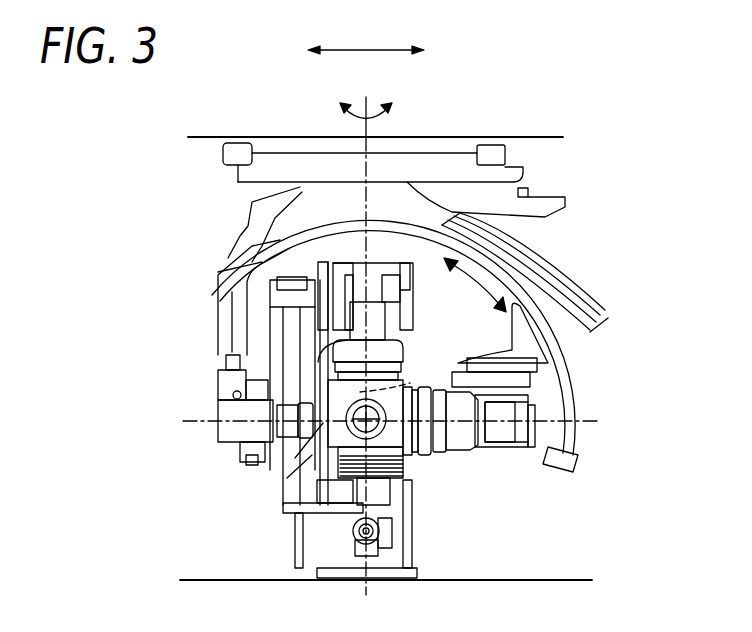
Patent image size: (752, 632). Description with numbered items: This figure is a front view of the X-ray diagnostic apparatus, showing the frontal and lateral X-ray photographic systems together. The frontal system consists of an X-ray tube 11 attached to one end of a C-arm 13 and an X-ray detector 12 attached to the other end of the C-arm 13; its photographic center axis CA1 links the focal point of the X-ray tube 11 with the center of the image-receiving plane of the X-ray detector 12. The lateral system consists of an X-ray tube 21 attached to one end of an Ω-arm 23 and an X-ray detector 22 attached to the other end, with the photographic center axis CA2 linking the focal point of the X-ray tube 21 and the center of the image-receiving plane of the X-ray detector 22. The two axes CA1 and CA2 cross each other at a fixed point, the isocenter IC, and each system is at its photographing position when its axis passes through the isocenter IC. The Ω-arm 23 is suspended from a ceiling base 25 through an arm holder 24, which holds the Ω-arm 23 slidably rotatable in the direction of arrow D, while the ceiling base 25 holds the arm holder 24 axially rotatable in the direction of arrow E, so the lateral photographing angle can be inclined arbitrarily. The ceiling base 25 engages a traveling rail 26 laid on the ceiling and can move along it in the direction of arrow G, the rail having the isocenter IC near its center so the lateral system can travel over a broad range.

The X-ray tube 11 is at (390, 530).
The X-ray detector 12 is at (402, 372).
The C-arm 13 is at (305, 267).
The X-ray tube 21 is at (242, 458).
The X-ray detector 22 is at (430, 453).
The Ω-arm 23 is at (566, 340).
The arm holder 24 is at (240, 235).
The ceiling base 25 is at (457, 165).
The traveling rail 26 is at (503, 154).
The photographic center axis CA1 is at (279, 482).
The photographic center axis CA2 is at (400, 390).
The isocenter IC is at (412, 460).
The arrow D is at (490, 274).
The arrow E is at (366, 93).
The arrow G is at (366, 38).